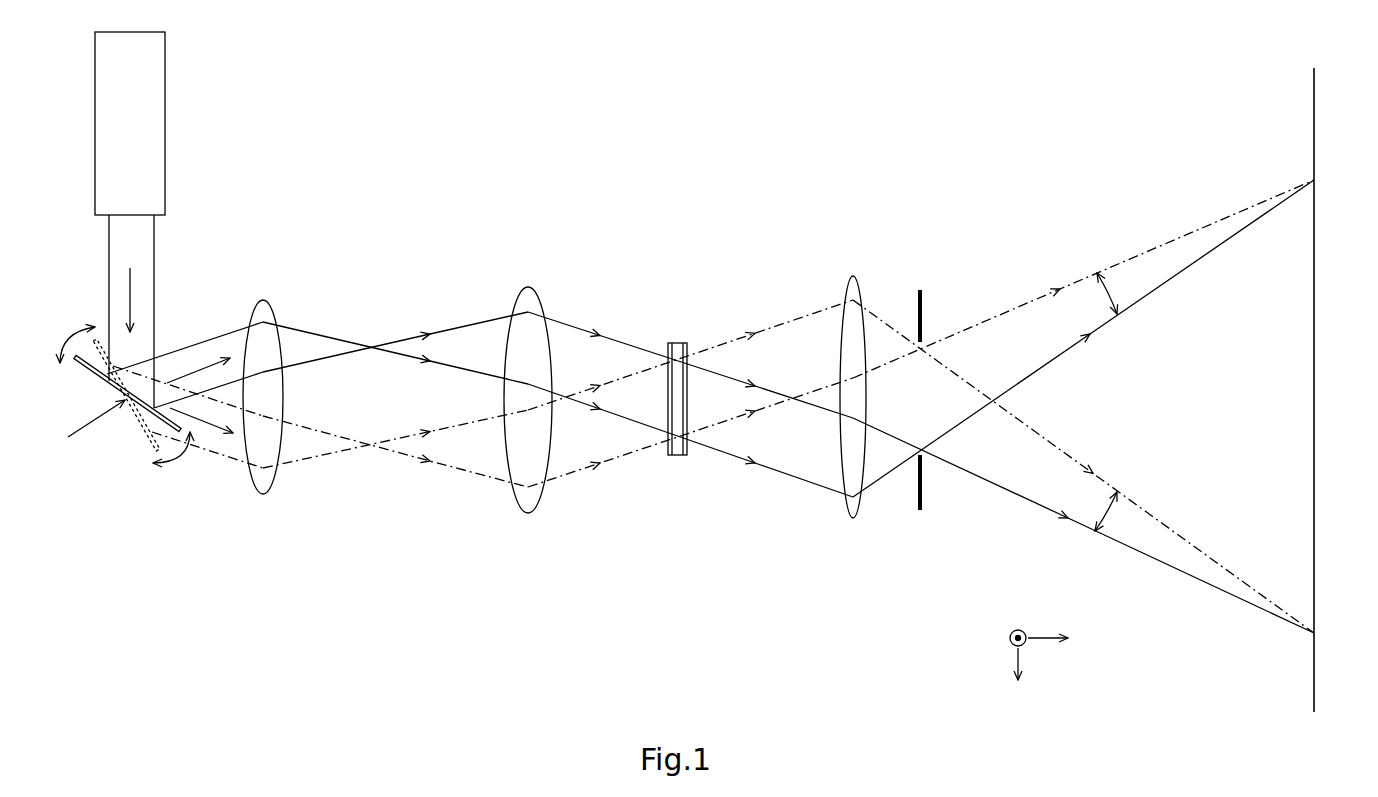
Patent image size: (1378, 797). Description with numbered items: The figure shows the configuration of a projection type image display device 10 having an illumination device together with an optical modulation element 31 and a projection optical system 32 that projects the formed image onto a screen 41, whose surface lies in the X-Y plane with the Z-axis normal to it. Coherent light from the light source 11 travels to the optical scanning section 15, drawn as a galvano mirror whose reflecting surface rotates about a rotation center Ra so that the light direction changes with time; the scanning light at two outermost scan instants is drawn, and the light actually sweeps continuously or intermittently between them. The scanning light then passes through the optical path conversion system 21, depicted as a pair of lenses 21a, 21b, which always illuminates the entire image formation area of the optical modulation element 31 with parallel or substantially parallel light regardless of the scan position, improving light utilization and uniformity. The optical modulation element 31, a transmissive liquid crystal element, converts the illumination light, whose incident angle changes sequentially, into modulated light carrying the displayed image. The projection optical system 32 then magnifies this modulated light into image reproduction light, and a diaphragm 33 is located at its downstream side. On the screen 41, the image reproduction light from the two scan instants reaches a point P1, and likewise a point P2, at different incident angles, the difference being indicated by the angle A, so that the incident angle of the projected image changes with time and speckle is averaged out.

The projection type image display device 10 is at (716, 170).
The light source 11 is at (165, 130).
The optical scanning section 15 is at (80, 362).
The optical path conversion system 21 is at (397, 449).
The first relay lens 21a is at (263, 494).
The second relay lens 21b is at (528, 430).
The optical modulation element 31 is at (679, 456).
The projection optical system 32 is at (856, 518).
The diaphragm 33 is at (922, 505).
The screen 41 is at (1314, 395).
The rotation center Ra is at (84, 427).
The point on the screen P1 is at (1332, 634).
The point on the screen P2 is at (1332, 181).
The angle between beams A is at (1099, 402).